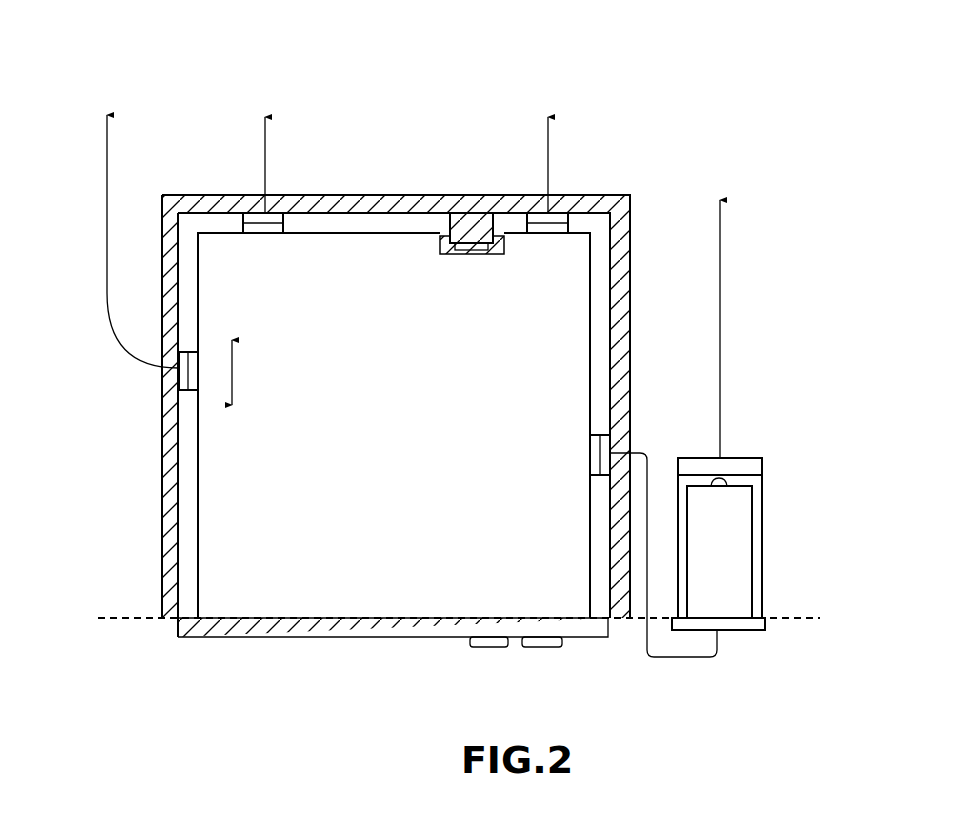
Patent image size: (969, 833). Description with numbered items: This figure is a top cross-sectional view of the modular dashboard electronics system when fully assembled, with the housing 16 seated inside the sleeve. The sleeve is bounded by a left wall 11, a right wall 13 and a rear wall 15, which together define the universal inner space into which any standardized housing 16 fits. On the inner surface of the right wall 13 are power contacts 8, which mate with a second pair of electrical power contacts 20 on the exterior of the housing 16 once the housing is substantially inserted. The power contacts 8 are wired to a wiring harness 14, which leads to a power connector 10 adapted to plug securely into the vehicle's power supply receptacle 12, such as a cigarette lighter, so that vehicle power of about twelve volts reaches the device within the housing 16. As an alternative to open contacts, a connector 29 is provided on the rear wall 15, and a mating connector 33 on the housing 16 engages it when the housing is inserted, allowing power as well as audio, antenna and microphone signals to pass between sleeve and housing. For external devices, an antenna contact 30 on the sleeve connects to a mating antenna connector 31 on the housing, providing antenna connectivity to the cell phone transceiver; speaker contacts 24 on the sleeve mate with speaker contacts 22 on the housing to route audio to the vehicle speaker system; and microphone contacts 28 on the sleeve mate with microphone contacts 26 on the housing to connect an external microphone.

The power contacts 8 is at (607, 442).
The power connector 10 is at (740, 633).
The left wall 11 is at (160, 556).
The power supply receptacle 12 is at (752, 500).
The right wall 13 is at (632, 322).
The wiring harness 14 is at (682, 658).
The rear wall 15 is at (222, 195).
The housing 16 is at (385, 245).
The electrical power contacts 20 is at (598, 445).
The speaker contacts 22 is at (195, 390).
The speaker contacts 24 is at (178, 385).
The microphone contacts 26 is at (265, 237).
The microphone contacts 28 is at (278, 213).
The connector 29 is at (468, 213).
The antenna contact 30 is at (572, 222).
The antenna connector 31 is at (532, 236).
The mating connector 33 is at (455, 252).